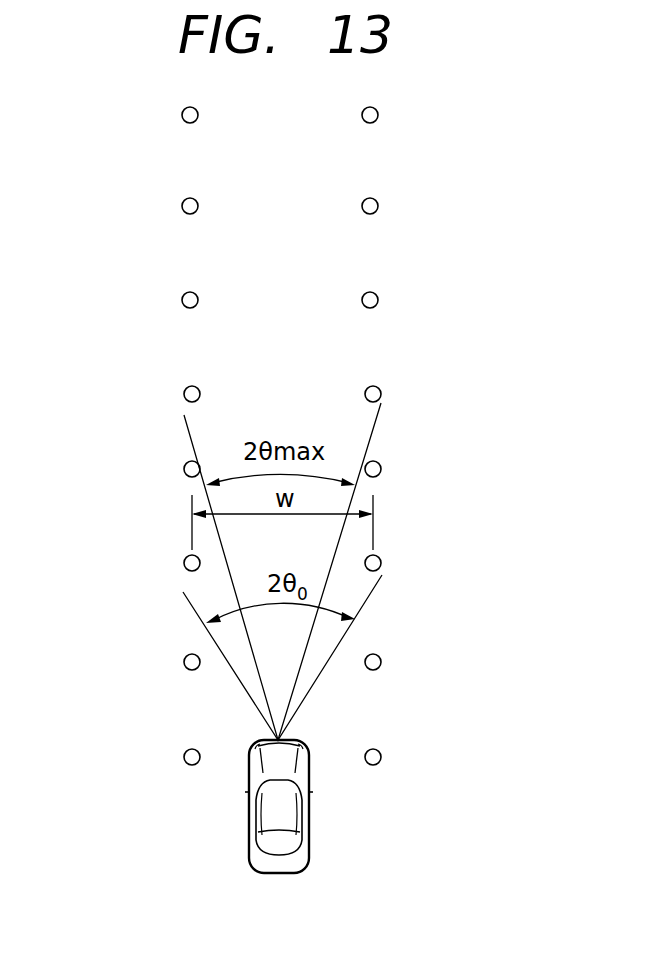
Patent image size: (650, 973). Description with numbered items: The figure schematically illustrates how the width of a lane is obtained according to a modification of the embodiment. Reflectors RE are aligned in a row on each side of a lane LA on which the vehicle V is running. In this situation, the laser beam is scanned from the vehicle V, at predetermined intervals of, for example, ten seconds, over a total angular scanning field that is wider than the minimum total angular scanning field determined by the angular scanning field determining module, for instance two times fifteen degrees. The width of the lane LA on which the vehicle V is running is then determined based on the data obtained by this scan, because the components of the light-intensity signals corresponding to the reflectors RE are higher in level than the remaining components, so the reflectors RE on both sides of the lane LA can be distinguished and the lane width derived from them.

The reflectors RE is at (182, 205).
The lane LA is at (193, 699).
The vehicle V is at (309, 808).